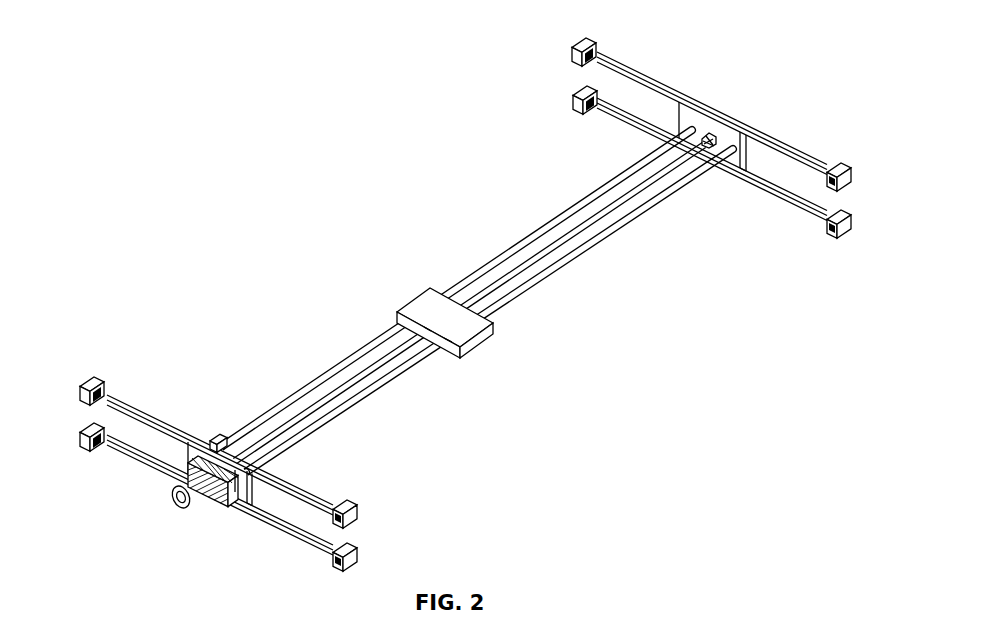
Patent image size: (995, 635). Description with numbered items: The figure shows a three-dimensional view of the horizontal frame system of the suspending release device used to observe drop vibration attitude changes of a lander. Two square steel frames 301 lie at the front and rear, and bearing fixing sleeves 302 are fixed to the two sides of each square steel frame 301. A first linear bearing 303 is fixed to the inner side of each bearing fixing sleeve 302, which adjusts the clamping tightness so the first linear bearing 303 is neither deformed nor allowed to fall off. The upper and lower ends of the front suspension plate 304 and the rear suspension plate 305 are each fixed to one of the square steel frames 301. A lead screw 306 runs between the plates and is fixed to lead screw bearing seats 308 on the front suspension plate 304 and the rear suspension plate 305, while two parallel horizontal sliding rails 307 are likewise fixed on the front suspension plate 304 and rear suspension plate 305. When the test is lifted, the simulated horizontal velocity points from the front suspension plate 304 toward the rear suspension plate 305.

The square steel frame 301 is at (167, 416).
The bearing fixing sleeve 302 is at (93, 380).
The first linear bearing 303 is at (82, 391).
The front suspension plate 304 is at (241, 497).
The rear suspension plate 305 is at (722, 141).
The lead screw 306 is at (489, 282).
The horizontal sliding rail 307 is at (529, 294).
The lead screw bearing seat 308 is at (701, 141).